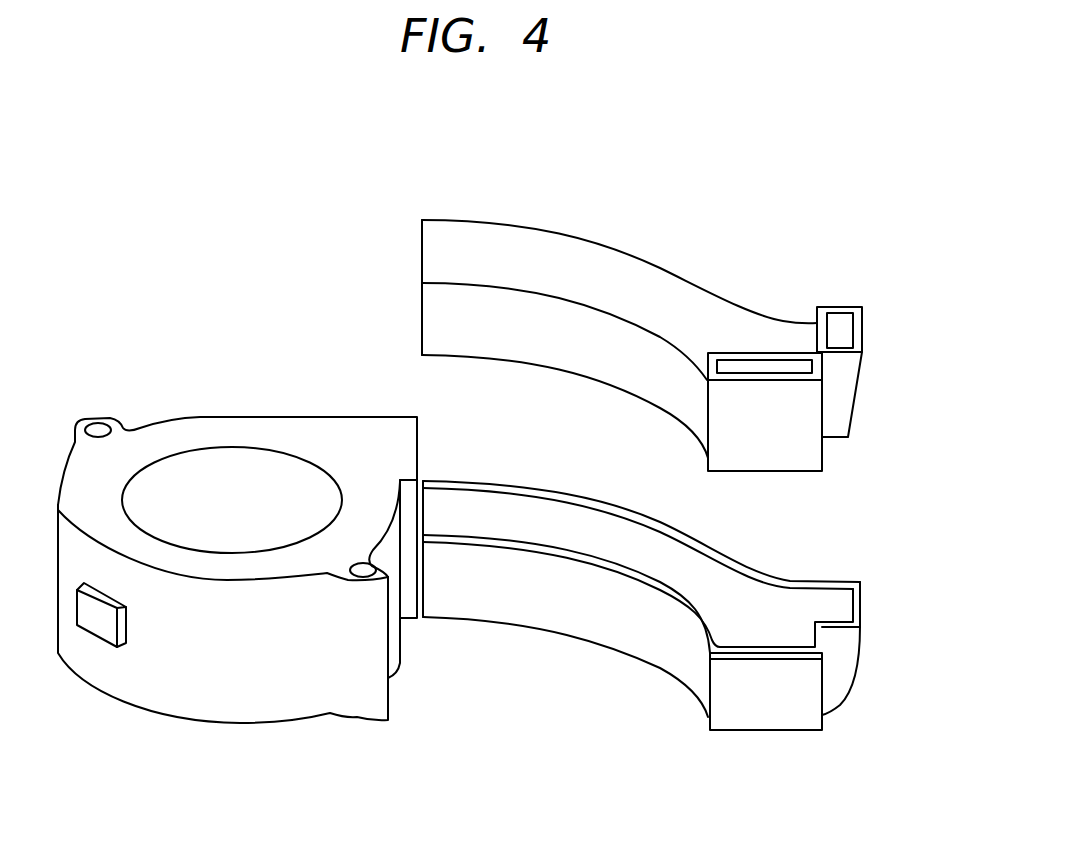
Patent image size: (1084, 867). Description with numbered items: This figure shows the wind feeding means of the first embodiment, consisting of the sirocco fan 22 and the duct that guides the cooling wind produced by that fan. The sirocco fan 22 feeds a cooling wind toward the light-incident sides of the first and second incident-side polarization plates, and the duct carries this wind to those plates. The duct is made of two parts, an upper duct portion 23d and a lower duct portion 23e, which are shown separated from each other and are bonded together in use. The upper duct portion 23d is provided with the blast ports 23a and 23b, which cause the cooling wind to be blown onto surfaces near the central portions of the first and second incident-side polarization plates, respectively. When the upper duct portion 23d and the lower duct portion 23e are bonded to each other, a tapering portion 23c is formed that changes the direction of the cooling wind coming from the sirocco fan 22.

The sirocco fan 22 is at (247, 463).
The blast port 23a is at (768, 377).
The blast port 23b is at (842, 307).
The tapering portion 23c is at (858, 603).
The upper duct portion 23d is at (600, 258).
The lower duct portion 23e is at (545, 610).